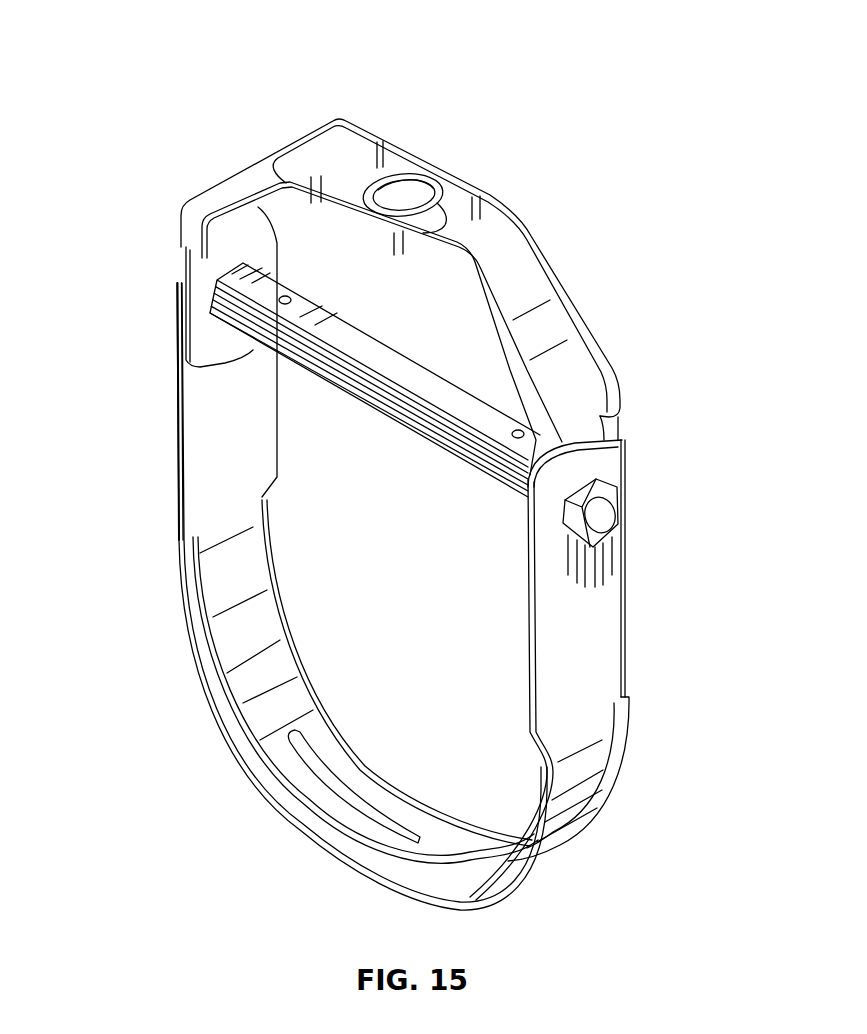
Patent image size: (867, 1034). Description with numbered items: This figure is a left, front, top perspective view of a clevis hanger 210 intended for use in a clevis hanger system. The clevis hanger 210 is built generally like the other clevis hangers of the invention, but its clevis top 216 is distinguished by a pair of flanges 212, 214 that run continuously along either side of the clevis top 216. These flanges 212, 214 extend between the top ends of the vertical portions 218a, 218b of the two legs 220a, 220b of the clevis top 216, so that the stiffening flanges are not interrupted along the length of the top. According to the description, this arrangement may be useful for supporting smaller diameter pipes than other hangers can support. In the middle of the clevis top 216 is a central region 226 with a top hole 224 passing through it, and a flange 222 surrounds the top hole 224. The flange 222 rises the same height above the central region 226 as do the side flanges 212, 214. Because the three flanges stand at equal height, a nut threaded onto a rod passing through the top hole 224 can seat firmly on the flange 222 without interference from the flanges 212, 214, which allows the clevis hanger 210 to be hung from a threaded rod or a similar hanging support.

The clevis hanger 210 is at (152, 42).
The flange 212 is at (573, 307).
The flange 214 is at (563, 370).
The clevis top 216 is at (580, 220).
The vertical portion 218a is at (190, 342).
The vertical portion 218b is at (523, 530).
The leg 220a is at (149, 204).
The leg 220b is at (643, 411).
The flange 222 is at (450, 200).
The top hole 224 is at (410, 193).
The central region 226 is at (470, 234).